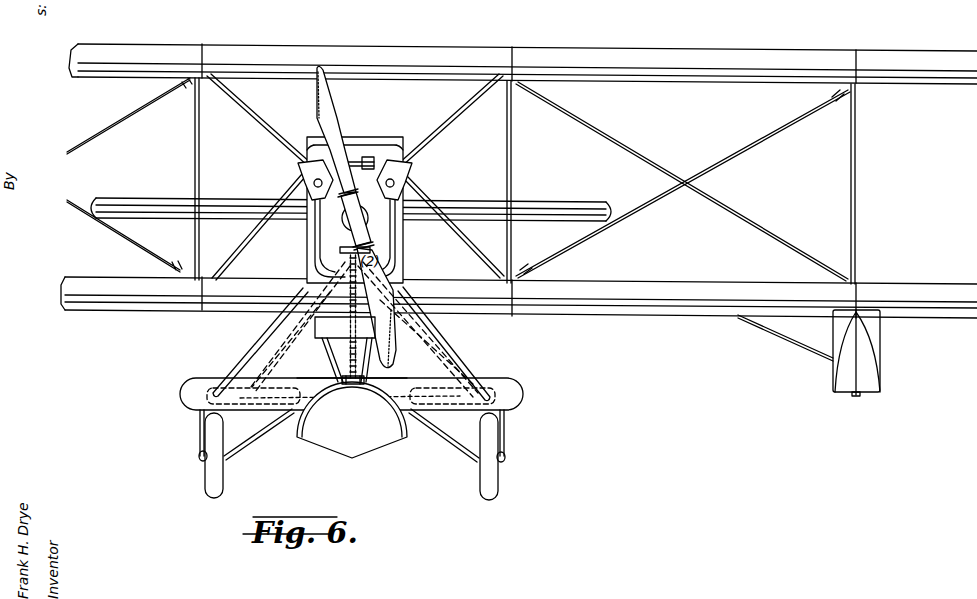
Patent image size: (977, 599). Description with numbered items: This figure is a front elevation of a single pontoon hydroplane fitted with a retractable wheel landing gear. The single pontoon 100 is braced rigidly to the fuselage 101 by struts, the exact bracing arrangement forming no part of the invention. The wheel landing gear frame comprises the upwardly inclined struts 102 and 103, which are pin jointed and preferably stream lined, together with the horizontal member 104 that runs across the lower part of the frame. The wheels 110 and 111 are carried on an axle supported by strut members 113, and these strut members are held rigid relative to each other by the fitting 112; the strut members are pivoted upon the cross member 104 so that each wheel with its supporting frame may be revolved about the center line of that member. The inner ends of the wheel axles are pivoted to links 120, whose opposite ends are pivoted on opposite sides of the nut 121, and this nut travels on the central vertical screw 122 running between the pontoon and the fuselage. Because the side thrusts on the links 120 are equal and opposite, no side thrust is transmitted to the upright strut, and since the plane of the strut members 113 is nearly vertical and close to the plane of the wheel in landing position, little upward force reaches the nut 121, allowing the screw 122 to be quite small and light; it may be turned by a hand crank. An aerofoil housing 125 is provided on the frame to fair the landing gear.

The single pontoon 100 is at (373, 443).
The fuselage 101 is at (400, 247).
The upwardly inclined strut 102 is at (258, 340).
The upwardly inclined strut 103 is at (280, 322).
The horizontal member 104 is at (200, 407).
The wheel 110 is at (214, 497).
The wheel 111 is at (492, 501).
The fitting 112 is at (201, 458).
The strut member 113 is at (200, 432).
The link 120 is at (258, 437).
The nut 121 is at (353, 385).
The central vertical screw 122 is at (348, 358).
The aerofoil housing 125 is at (503, 385).